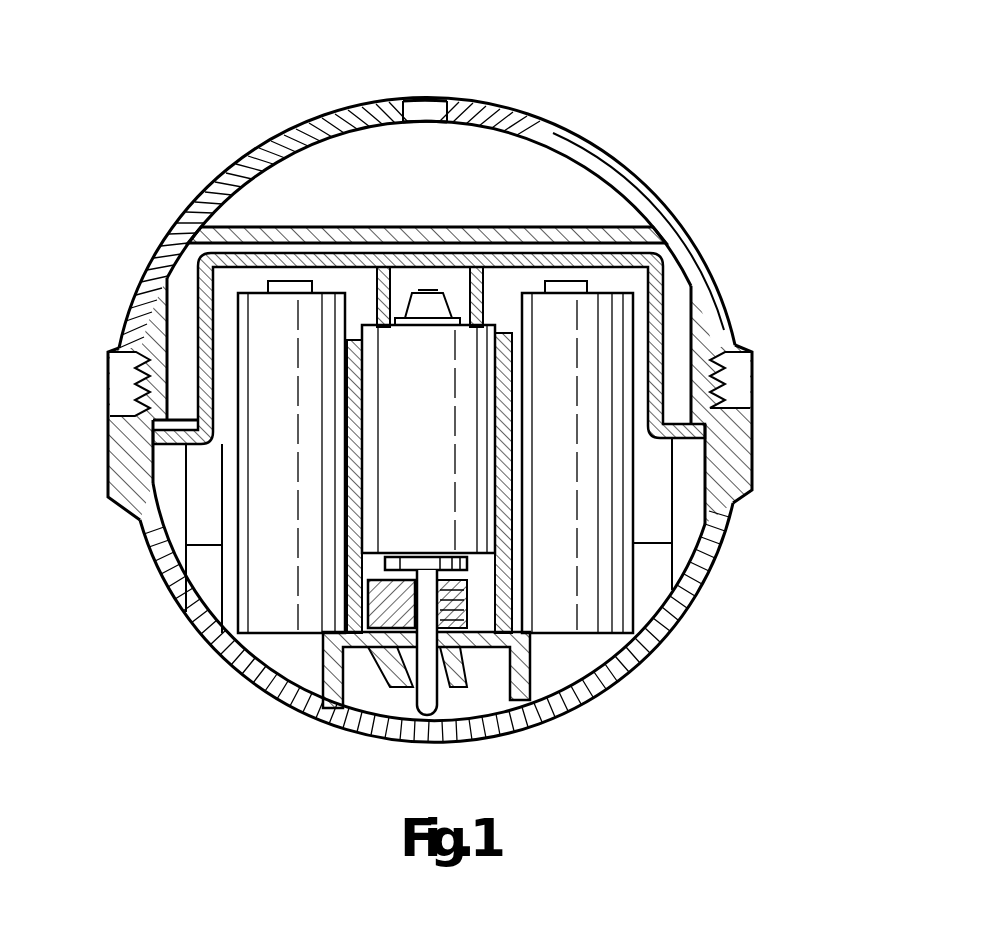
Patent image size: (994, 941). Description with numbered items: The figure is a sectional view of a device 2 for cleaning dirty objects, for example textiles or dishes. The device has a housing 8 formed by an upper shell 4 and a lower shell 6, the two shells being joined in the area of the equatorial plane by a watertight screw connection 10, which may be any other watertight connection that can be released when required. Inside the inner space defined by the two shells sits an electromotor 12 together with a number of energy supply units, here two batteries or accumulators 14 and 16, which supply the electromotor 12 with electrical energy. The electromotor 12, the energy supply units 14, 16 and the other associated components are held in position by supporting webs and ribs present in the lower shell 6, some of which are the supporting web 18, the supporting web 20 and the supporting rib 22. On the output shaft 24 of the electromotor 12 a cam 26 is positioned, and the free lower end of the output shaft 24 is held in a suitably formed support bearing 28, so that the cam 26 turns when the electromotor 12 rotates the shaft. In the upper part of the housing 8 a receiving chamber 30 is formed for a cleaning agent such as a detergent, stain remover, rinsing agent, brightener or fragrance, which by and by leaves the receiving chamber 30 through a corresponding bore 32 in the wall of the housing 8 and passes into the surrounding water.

The device 2 is at (711, 201).
The upper shell 4 is at (593, 150).
The lower shell 6 is at (671, 619).
The housing 8 is at (194, 189).
The watertight screw connection 10 is at (741, 400).
The electromotor 12 is at (440, 466).
The energy supply unit 14 is at (286, 466).
The energy supply unit 16 is at (569, 466).
The supporting web 18 is at (651, 321).
The supporting web 20 is at (227, 515).
The supporting rib 22 is at (350, 577).
The output shaft 24 is at (425, 592).
The cam 26 is at (345, 725).
The support bearing 28 is at (453, 688).
The receiving chamber 30 is at (447, 199).
The bore 32 is at (430, 110).